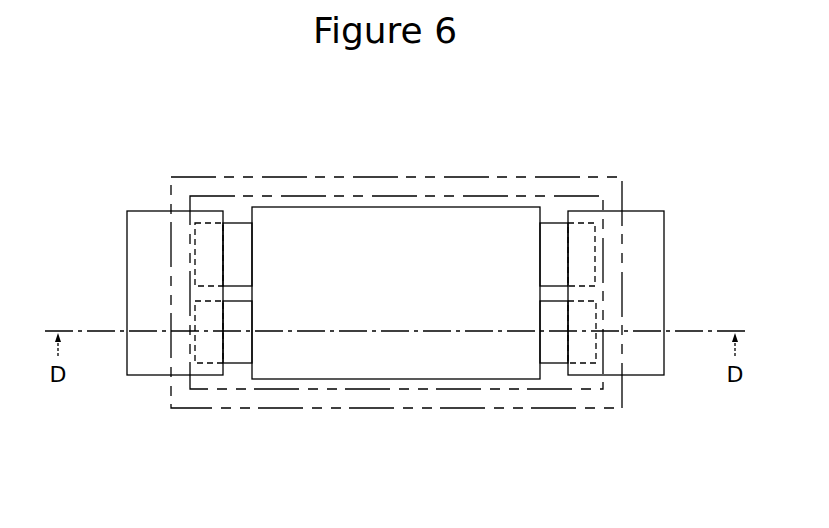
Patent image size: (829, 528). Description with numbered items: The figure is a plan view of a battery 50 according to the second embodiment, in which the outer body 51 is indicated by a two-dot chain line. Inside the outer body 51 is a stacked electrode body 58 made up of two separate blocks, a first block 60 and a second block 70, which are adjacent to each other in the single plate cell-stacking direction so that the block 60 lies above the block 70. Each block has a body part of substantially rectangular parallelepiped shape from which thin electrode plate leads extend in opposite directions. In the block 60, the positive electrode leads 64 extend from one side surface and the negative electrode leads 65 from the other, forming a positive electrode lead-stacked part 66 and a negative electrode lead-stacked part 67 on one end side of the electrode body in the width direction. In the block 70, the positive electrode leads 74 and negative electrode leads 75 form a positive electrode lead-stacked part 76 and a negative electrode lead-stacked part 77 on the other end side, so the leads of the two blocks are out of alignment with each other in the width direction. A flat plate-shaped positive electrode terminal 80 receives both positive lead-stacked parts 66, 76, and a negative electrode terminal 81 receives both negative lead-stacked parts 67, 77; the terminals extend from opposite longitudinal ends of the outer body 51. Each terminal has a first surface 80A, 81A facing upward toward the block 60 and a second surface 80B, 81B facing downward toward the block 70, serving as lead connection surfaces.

The battery 50 is at (655, 105).
The outer body 51 is at (393, 382).
The stacked electrode body 58 is at (350, 107).
The first block 60 is at (368, 222).
The second block 70 is at (428, 216).
The positive electrode leads 64 is at (556, 232).
The negative electrode leads 65 is at (245, 232).
The positive electrode lead-stacked part 66 is at (583, 235).
The negative electrode lead-stacked part 67 is at (207, 233).
The positive electrode leads 74 is at (553, 353).
The negative electrode leads 75 is at (237, 352).
The positive electrode lead-stacked part 76 is at (585, 350).
The negative electrode lead-stacked part 77 is at (208, 350).
The positive electrode terminal 80 is at (652, 240).
The first surface 80A is at (652, 270).
The second surface 80B is at (652, 300).
The negative electrode terminal 81 is at (137, 240).
The first surface 81A is at (138, 270).
The second surface 81B is at (138, 300).